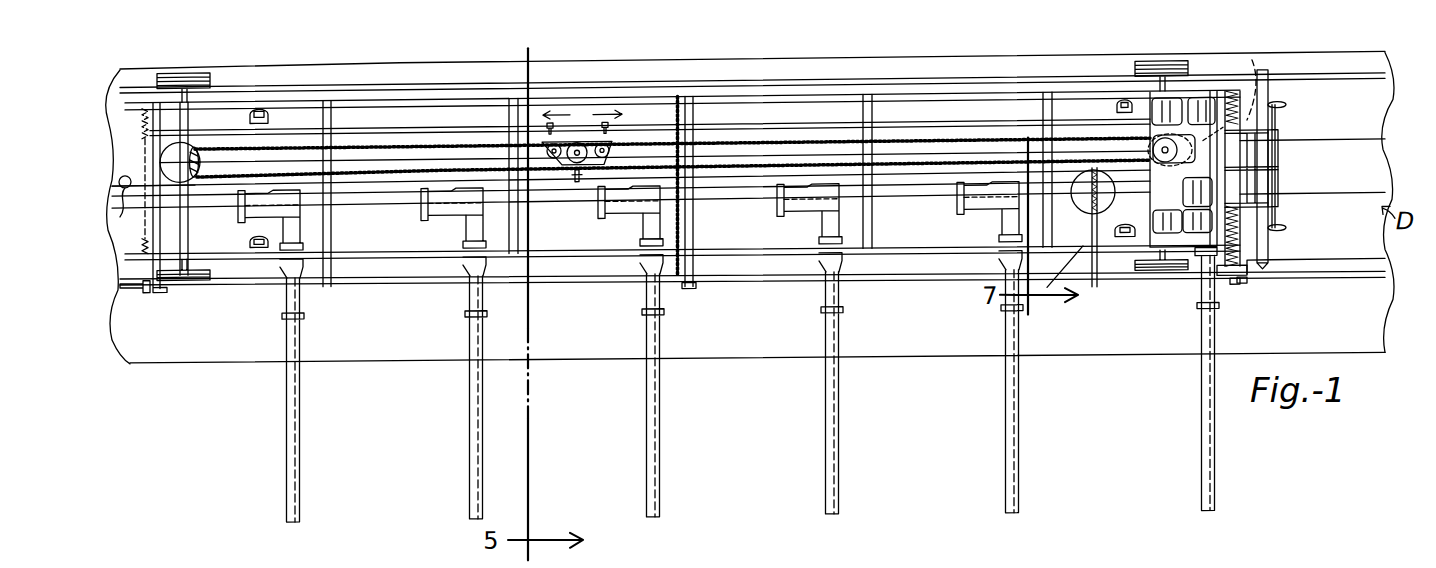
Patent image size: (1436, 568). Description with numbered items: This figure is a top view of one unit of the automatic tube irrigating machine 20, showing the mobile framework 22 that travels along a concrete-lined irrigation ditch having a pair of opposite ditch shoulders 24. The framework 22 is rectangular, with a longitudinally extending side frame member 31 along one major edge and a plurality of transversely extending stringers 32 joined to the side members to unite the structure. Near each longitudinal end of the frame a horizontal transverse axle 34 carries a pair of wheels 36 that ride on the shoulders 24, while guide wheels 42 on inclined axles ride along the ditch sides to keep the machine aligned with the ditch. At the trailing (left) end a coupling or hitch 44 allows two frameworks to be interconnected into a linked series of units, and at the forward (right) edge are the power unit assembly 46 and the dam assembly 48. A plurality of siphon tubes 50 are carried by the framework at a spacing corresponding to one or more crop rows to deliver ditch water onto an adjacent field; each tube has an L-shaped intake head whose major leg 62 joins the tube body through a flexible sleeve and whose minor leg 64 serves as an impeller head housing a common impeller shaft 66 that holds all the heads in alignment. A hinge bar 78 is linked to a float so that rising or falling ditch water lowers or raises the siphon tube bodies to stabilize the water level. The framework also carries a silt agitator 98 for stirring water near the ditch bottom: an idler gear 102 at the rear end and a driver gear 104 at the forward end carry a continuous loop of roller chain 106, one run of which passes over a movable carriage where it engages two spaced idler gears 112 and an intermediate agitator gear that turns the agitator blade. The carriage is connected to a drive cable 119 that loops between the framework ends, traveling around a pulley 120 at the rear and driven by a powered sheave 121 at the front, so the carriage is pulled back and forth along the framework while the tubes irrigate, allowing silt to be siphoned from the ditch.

The automatic tube irrigating machine 20 is at (712, 293).
The mobile framework 22 is at (765, 92).
The ditch shoulders 24 is at (1353, 74).
The side frame member 31 is at (452, 99).
The stringers 32 is at (333, 281).
The horizontal transverse axle 34 is at (187, 247).
The wheels 36 is at (200, 70).
The guide wheels 42 is at (272, 116).
The coupling or hitch 44 is at (126, 203).
The power unit assembly 46 is at (1238, 295).
The dam assembly 48 is at (1297, 210).
The siphon tubes 50 is at (300, 479).
The major leg 62 is at (818, 228).
The minor leg 64 is at (617, 213).
The impeller shaft 66 is at (935, 203).
The hinge bar 78 is at (790, 288).
The silt agitator 98 is at (580, 147).
The idler gear 102 is at (198, 176).
The driver gear 104 is at (1170, 154).
The roller chain 106 is at (945, 142).
The idler gears 112 is at (552, 147).
The drive cable 119 is at (412, 168).
The pulley 120 is at (197, 146).
The powered sheave 121 is at (1253, 72).